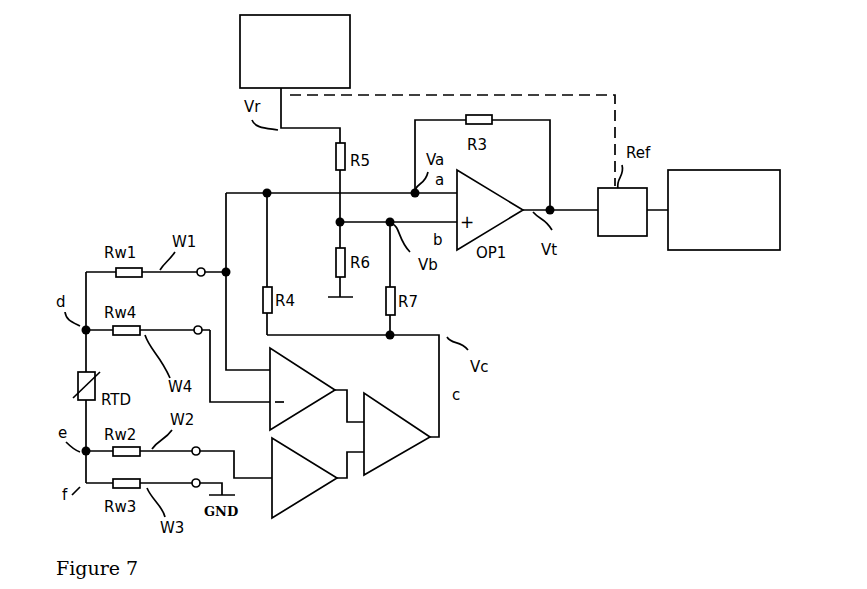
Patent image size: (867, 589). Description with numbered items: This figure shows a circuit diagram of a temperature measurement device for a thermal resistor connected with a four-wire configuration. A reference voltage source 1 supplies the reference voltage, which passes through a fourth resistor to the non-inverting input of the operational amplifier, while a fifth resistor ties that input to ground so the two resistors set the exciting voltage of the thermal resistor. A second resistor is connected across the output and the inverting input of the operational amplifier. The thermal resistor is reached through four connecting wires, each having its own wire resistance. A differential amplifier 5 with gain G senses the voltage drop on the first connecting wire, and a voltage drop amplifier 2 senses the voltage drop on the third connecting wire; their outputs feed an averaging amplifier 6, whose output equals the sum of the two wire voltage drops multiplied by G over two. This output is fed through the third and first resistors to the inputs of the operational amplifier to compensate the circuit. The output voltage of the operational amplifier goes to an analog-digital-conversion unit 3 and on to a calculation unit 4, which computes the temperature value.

The reference voltage source 1 is at (350, 62).
The voltage drop amplifier 2 is at (315, 495).
The analog-digital-conversion unit 3 is at (618, 236).
The calculation unit 4 is at (715, 250).
The differential amplifier 5 is at (310, 404).
The averaging amplifier 6 is at (405, 452).